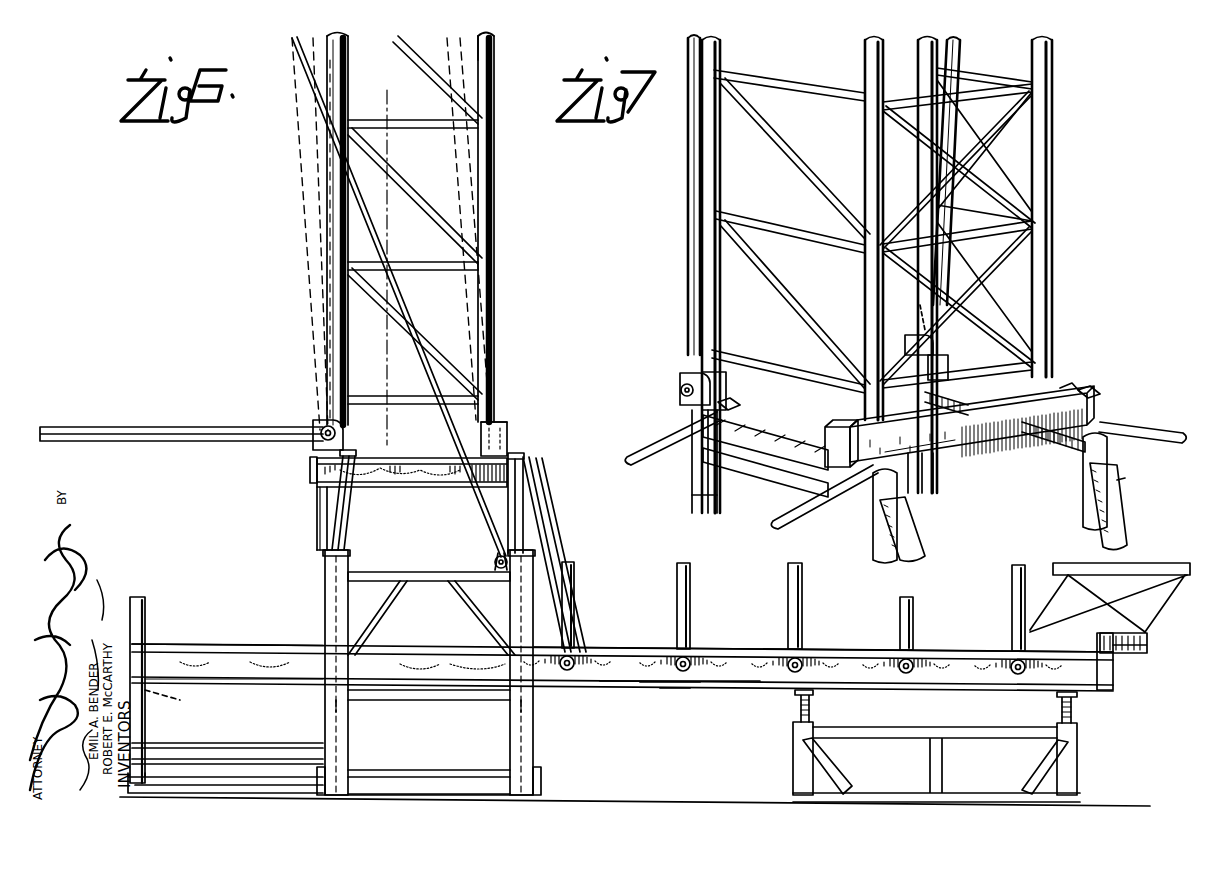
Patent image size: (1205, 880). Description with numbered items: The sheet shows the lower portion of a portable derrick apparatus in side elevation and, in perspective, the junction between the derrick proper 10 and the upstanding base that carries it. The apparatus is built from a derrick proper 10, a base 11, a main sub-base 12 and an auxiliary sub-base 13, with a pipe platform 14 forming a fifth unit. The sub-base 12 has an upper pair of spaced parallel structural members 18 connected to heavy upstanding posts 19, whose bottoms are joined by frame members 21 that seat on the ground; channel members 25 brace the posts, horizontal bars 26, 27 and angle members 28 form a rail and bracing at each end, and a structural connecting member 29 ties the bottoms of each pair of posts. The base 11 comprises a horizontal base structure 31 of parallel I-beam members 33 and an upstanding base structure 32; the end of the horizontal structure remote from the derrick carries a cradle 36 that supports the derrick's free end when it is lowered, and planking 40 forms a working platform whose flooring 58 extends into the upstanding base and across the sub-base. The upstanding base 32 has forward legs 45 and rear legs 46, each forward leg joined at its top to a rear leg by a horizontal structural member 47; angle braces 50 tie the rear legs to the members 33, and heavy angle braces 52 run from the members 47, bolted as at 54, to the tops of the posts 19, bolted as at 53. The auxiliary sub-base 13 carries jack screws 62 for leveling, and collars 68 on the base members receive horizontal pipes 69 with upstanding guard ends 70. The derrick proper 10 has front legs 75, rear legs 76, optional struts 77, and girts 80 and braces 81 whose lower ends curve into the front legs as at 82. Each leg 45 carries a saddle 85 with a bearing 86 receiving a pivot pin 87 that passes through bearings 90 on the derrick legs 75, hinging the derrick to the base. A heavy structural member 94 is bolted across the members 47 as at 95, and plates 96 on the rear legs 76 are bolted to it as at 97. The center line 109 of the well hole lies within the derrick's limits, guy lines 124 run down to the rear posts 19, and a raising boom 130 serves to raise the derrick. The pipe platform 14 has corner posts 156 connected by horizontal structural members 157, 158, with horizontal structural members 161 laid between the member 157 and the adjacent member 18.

In FIG. 6, the derrick proper 10 is at (511, 286).
In FIG. 7, the derrick proper 10 is at (1062, 233).
In FIG. 6, the base 11 is at (300, 546).
In FIG. 7, the base 11 is at (1114, 486).
In FIG. 6, the main sub-base 12 is at (538, 710).
In FIG. 6, the auxiliary sub-base 13 is at (784, 753).
In FIG. 6, the pipe platform 14 is at (206, 645).
In FIG. 6, the structural members 18 is at (350, 712).
In FIG. 6, the posts 19 is at (325, 614).
In FIG. 6, the frame members 21 is at (325, 798).
In FIG. 6, the channel members 25 is at (450, 692).
In FIG. 6, the horizontal bars 26 is at (432, 572).
In FIG. 6, the horizontal bars 27 is at (438, 688).
In FIG. 6, the angle members 28 is at (380, 612).
In FIG. 6, the structural connecting member 29 is at (406, 776).
In FIG. 6, the horizontal base structure 31 is at (656, 690).
In FIG. 6, the upstanding base structure 32 is at (308, 504).
In FIG. 7, the upstanding base structure 32 is at (686, 496).
In FIG. 6, the horizontal parallel structural members 33 is at (745, 686).
In FIG. 6, the cradle 36 is at (1170, 605).
In FIG. 6, the planking 40 is at (722, 649).
In FIG. 6, the forward legs 45 is at (318, 520).
In FIG. 7, the forward legs 45 is at (692, 474).
In FIG. 6, the rear legs 46 is at (530, 462).
In FIG. 7, the rear legs 46 is at (873, 560).
In FIG. 6, the horizontal structural member 47 is at (420, 458).
In FIG. 7, the horizontal structural member 47 is at (762, 472).
In FIG. 6, the angle braces 50 is at (565, 517).
In FIG. 7, the angle braces 50 is at (916, 558).
In FIG. 6, the angle braces 52 is at (345, 518).
In FIG. 7, the angle braces 52 is at (640, 448).
In FIG. 6, the bolt connection 53 is at (493, 538).
In FIG. 6, the bolt connection 54 is at (352, 450).
In FIG. 7, the bolt connection 54 is at (730, 398).
In FIG. 6, the flooring 58 is at (440, 646).
In FIG. 6, the jack screws 62 is at (798, 712).
In FIG. 6, the collars 68 is at (683, 692).
In FIG. 6, the horizontal pipes 69 is at (574, 670).
In FIG. 6, the guard ends 70 is at (575, 602).
In FIG. 6, the front legs 75 is at (347, 38).
In FIG. 7, the front legs 75 is at (720, 168).
In FIG. 6, the rear legs 76 is at (494, 70).
In FIG. 7, the rear legs 76 is at (865, 162).
In FIG. 6, the struts 77 is at (328, 362).
In FIG. 7, the struts 77 is at (688, 162).
In FIG. 6, the girts 80 is at (408, 262).
In FIG. 7, the girts 80 is at (781, 226).
In FIG. 6, the braces 81 is at (416, 66).
In FIG. 7, the braces 81 is at (812, 152).
In FIG. 7, the curved ends 82 is at (920, 320).
In FIG. 6, the saddle 85 is at (310, 470).
In FIG. 6, the bearing 86 is at (318, 450).
In FIG. 7, the bearing 86 is at (678, 385).
In FIG. 6, the pivot pin 87 is at (321, 428).
In FIG. 7, the pivot pin 87 is at (680, 398).
In FIG. 7, the bearings 90 is at (702, 372).
In FIG. 6, the structural member 94 is at (507, 422).
In FIG. 7, the structural member 94 is at (992, 458).
In FIG. 7, the bolt connection 95 is at (858, 425).
In FIG. 6, the plates 96 is at (505, 422).
In FIG. 7, the plates 96 is at (1062, 388).
In FIG. 7, the bolt connection 97 is at (1055, 375).
In FIG. 6, the center line of the well hole 109 is at (385, 362).
In FIG. 6, the guy lines 124 is at (360, 213).
In FIG. 6, the raising boom 130 is at (185, 427).
In FIG. 6, the corner posts 156 is at (138, 597).
In FIG. 6, the horizontal structural member 157 is at (175, 703).
In FIG. 6, the horizontal structural member 158 is at (140, 795).
In FIG. 6, the horizontal structural members 161 is at (262, 672).